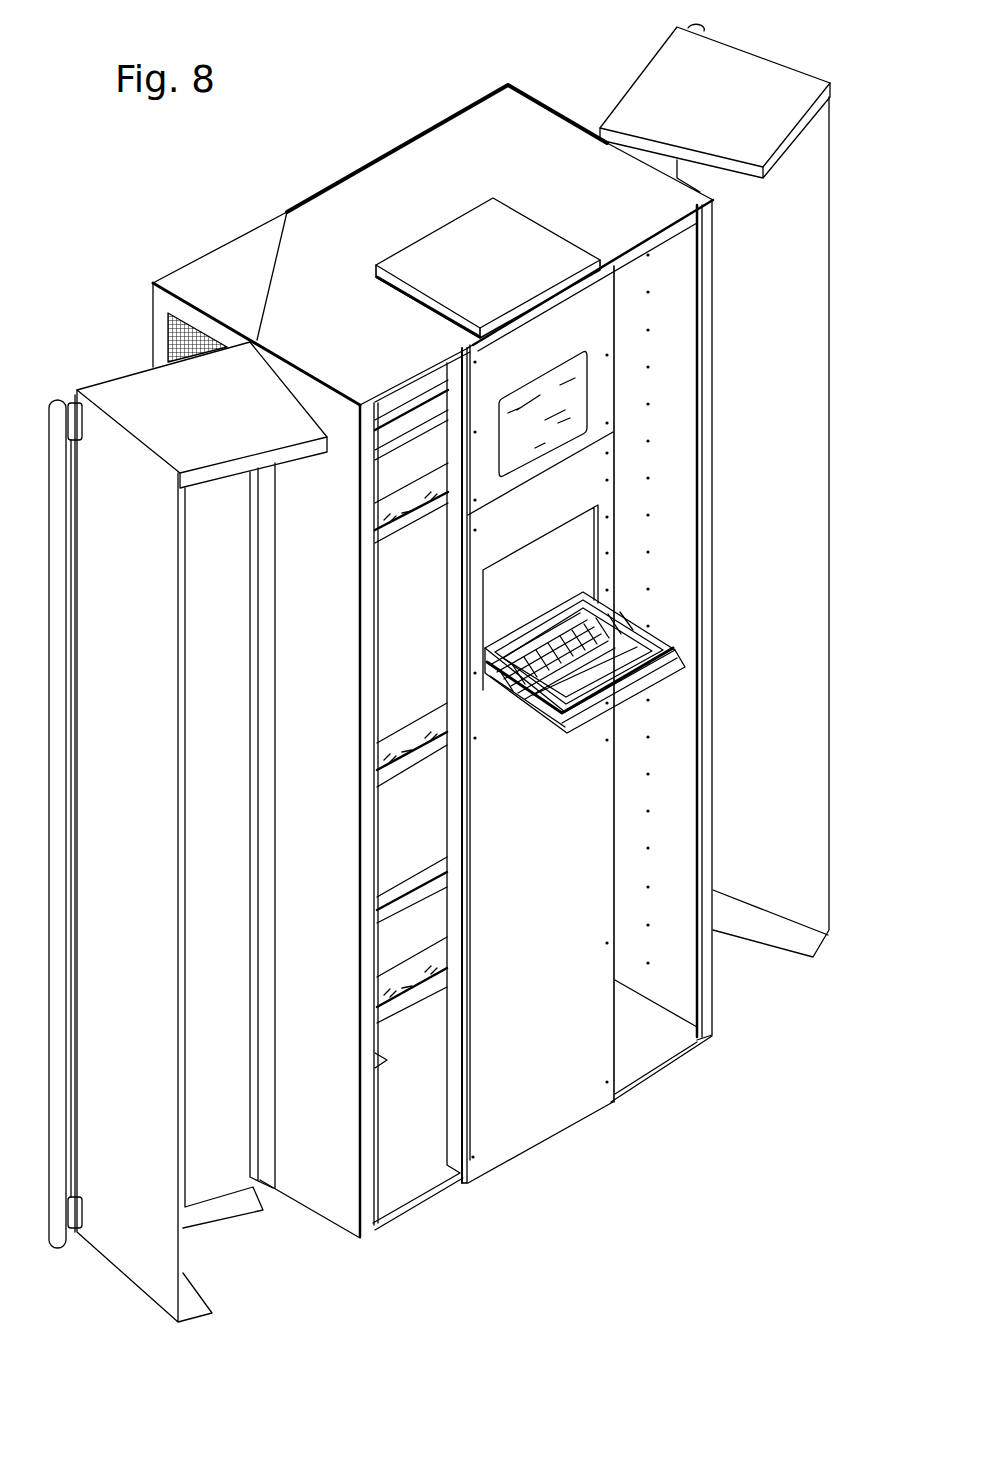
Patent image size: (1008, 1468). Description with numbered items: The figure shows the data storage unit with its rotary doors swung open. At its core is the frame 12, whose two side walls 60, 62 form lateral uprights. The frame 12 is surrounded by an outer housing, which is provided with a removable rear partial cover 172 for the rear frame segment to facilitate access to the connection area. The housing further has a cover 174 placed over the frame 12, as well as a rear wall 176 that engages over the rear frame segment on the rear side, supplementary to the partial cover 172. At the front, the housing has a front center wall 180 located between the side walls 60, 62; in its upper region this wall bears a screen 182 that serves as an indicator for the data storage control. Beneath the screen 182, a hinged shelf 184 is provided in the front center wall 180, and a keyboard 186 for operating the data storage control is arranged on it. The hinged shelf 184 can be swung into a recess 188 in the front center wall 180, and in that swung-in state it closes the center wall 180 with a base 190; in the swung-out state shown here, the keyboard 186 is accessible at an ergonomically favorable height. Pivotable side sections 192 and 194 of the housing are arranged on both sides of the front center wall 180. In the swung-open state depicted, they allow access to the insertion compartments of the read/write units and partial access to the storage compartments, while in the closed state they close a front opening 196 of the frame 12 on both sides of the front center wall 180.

The frame 12 is at (717, 278).
The side wall 60 is at (335, 1199).
The side wall 62 is at (716, 1002).
The partial cover 172 is at (230, 267).
The cover 174 is at (365, 207).
The rear wall 176 is at (420, 130).
The front center wall 180 is at (558, 1092).
The screen 182 is at (567, 398).
The hinged shelf 184 is at (550, 715).
The keyboard 186 is at (600, 633).
The recess 188 is at (592, 540).
The base 190 is at (623, 700).
The pivotable side section 192 is at (123, 390).
The pivotable side section 194 is at (637, 108).
The front opening 196 is at (417, 1193).